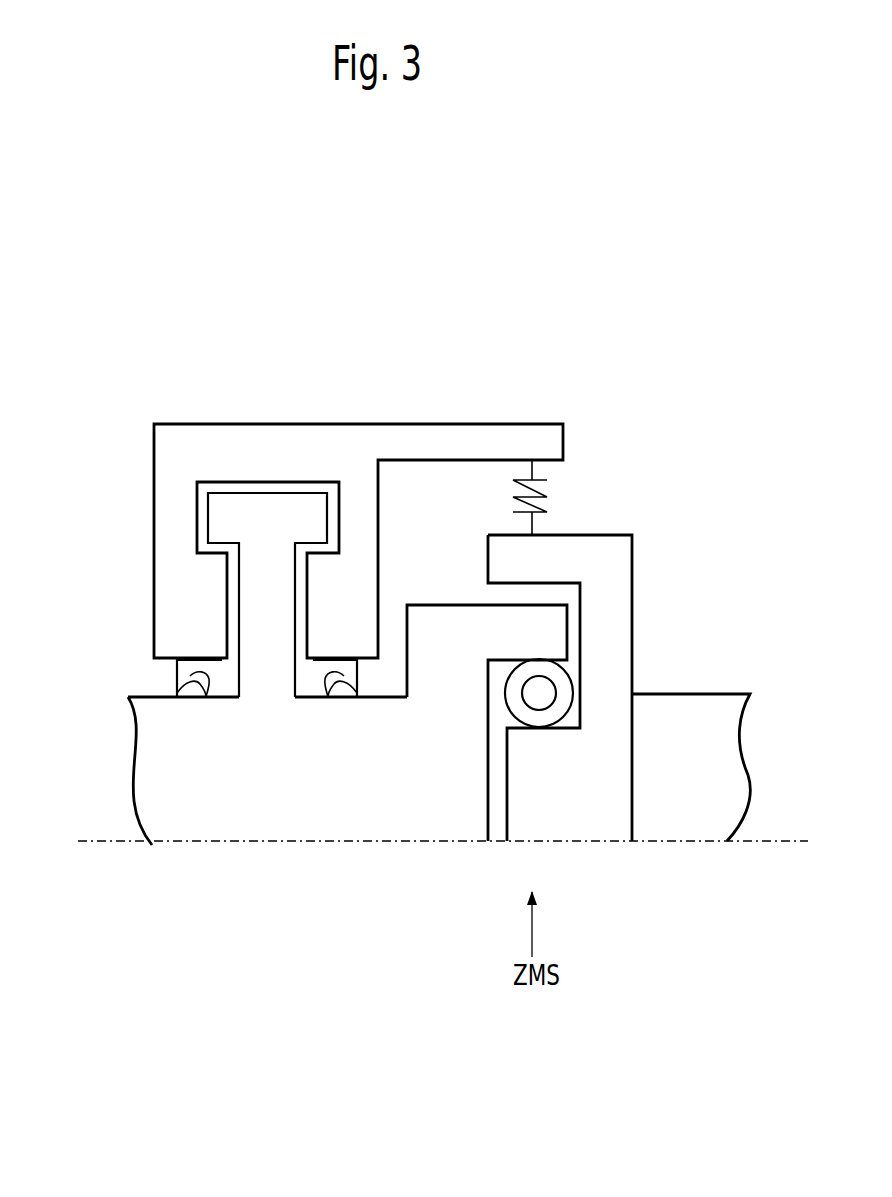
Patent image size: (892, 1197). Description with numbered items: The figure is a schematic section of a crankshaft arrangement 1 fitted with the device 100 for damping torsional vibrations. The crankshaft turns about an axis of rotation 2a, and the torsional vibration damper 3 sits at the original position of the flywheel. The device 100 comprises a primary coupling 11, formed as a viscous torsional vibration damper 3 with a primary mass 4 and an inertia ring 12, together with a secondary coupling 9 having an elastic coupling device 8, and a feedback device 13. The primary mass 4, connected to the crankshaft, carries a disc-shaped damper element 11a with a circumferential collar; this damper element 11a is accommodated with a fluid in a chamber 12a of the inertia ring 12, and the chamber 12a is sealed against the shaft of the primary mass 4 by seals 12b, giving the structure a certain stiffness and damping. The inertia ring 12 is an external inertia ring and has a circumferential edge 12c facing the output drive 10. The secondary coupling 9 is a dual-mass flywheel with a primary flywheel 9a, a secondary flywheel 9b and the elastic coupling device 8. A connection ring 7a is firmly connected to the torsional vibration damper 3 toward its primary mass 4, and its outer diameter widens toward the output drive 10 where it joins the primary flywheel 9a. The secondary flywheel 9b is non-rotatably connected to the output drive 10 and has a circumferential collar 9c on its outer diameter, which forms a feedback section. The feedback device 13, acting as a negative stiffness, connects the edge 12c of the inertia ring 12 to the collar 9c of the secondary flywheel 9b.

The crankshaft arrangement 1 is at (203, 953).
The axis of rotation 2a is at (97, 847).
The torsional vibration damper 3 is at (137, 523).
The primary mass 4 is at (267, 772).
The connection ring 7a is at (445, 692).
The elastic coupling device 8 is at (539, 693).
The secondary coupling 9 is at (640, 550).
The primary flywheel 9a is at (535, 633).
The secondary flywheel 9b is at (573, 790).
The circumferential collar 9c is at (557, 560).
The output drive 10 is at (698, 722).
The primary coupling 11 is at (143, 468).
The damper element 11a is at (258, 518).
The inertia ring 12 is at (268, 450).
The chamber 12a is at (332, 517).
The seals 12b is at (190, 687).
The circumferential edge 12c is at (425, 442).
The feedback device 13 is at (547, 497).
The device for damping torsional vibrations 100 is at (540, 372).